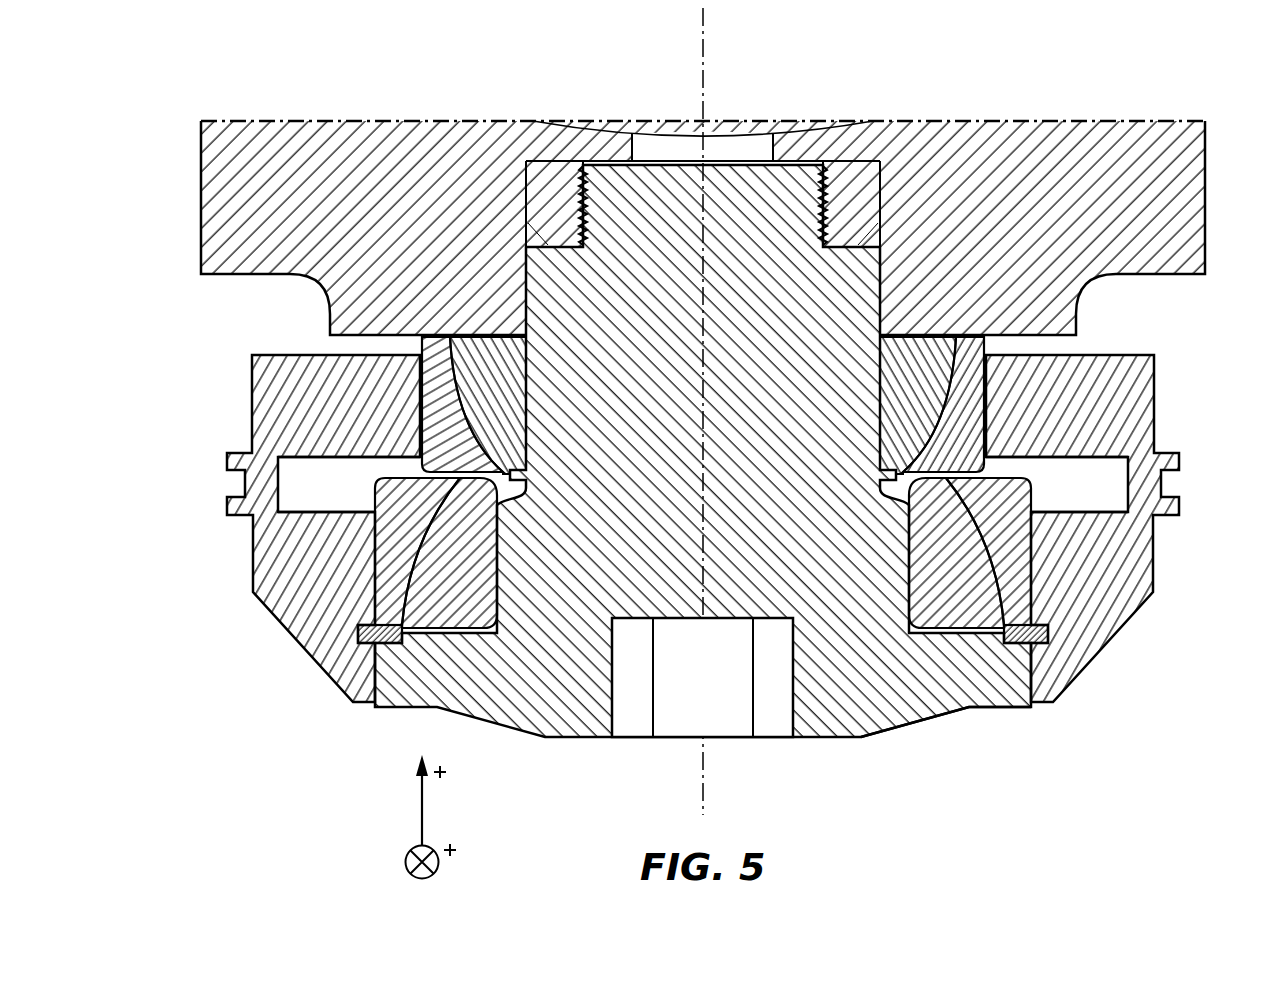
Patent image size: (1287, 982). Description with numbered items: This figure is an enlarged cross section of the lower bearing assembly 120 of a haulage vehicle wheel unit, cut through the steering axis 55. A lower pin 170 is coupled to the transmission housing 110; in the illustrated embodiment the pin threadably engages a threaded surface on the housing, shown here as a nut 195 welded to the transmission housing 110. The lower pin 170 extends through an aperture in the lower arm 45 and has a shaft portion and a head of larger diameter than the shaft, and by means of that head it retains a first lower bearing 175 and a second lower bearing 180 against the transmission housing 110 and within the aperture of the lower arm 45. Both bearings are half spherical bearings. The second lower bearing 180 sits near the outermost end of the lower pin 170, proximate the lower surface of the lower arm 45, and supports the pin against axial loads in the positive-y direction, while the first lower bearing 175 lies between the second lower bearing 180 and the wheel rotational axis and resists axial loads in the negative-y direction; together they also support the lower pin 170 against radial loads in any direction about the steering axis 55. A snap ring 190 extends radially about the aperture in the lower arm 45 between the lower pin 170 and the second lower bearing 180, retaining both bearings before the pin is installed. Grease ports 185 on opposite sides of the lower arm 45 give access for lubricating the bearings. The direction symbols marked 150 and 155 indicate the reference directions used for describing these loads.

The lower arm 45 is at (275, 547).
The steering axis 55 is at (706, 94).
The transmission housing 110 is at (400, 202).
The lower bearing assembly 120 is at (950, 760).
The radial direction indicator 150 is at (421, 880).
The axial direction indicator 155 is at (424, 806).
The lower pin 170 is at (827, 652).
The first lower bearing 175 is at (417, 437).
The second lower bearing 180 is at (450, 602).
The grease ports 185 is at (305, 478).
The snap ring 190 is at (358, 630).
The nut 195 is at (555, 180).